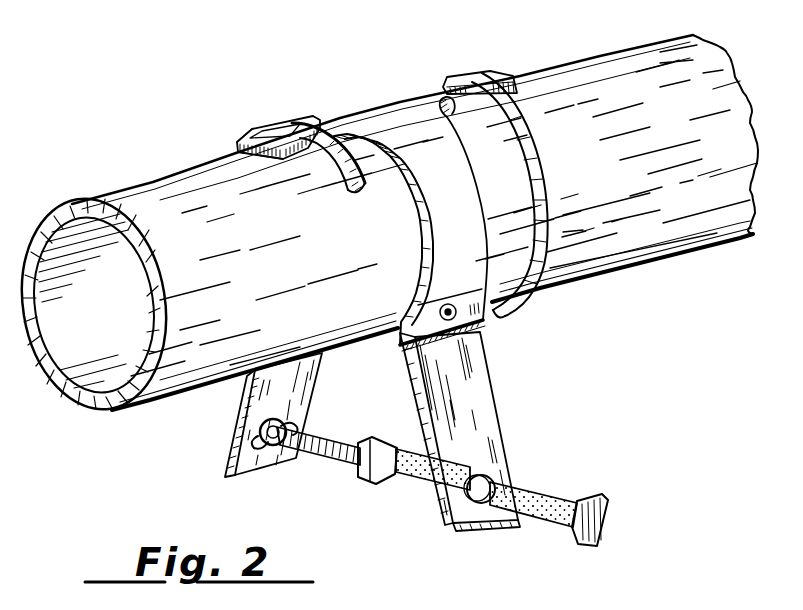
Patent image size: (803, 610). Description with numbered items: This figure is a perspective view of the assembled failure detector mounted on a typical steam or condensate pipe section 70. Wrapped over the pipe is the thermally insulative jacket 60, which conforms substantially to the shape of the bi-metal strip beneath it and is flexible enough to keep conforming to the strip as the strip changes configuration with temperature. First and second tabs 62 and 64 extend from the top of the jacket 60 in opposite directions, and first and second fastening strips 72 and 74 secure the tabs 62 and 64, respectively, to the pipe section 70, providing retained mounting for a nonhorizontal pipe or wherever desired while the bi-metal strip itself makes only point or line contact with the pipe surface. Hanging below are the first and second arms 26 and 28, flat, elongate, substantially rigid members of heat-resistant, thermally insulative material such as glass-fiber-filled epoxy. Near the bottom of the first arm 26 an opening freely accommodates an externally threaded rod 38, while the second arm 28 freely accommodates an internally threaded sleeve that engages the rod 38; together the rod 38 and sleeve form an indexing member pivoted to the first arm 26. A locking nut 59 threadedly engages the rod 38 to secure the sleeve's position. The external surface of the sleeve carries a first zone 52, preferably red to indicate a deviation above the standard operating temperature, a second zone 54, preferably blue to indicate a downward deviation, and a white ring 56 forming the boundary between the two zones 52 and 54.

The pipe section 70 is at (155, 191).
The first fastening strip 72 is at (305, 128).
The first tab 62 is at (295, 158).
The thermally insulative jacket 60 is at (447, 221).
The second tab 64 is at (497, 72).
The second fastening strip 74 is at (540, 203).
The first arm 26 is at (272, 396).
The second arm 28 is at (460, 400).
The externally threaded rod 38 is at (342, 455).
The locking nut 59 is at (395, 443).
The first zone 52 is at (420, 488).
The ring 56 is at (495, 480).
The second zone 54 is at (562, 512).